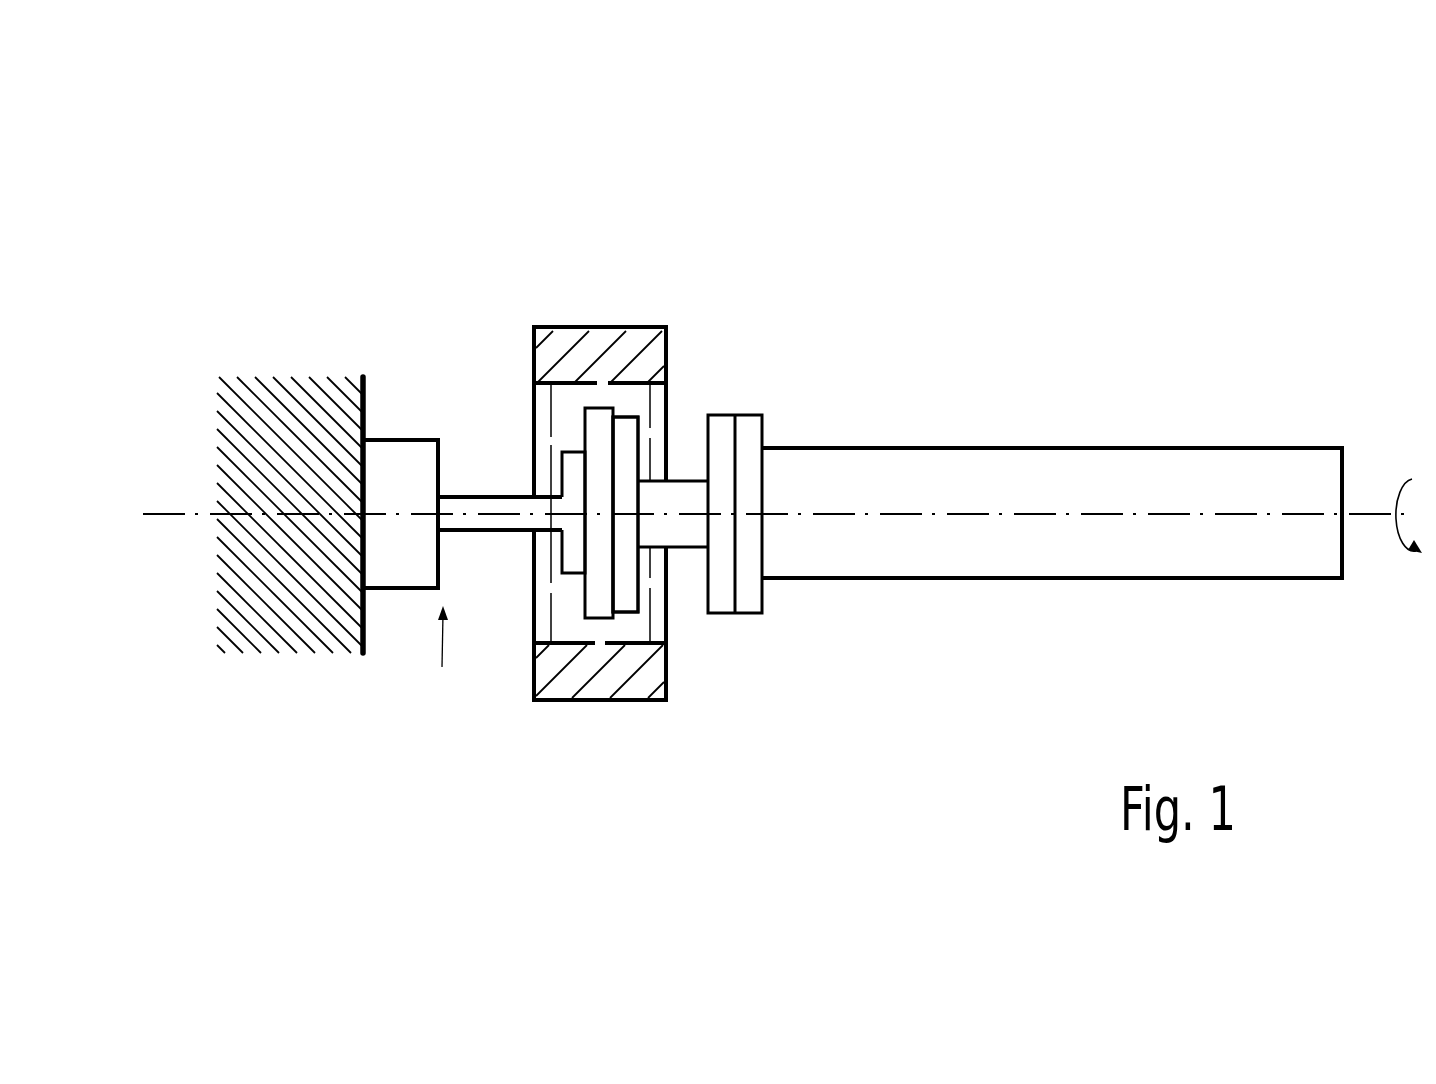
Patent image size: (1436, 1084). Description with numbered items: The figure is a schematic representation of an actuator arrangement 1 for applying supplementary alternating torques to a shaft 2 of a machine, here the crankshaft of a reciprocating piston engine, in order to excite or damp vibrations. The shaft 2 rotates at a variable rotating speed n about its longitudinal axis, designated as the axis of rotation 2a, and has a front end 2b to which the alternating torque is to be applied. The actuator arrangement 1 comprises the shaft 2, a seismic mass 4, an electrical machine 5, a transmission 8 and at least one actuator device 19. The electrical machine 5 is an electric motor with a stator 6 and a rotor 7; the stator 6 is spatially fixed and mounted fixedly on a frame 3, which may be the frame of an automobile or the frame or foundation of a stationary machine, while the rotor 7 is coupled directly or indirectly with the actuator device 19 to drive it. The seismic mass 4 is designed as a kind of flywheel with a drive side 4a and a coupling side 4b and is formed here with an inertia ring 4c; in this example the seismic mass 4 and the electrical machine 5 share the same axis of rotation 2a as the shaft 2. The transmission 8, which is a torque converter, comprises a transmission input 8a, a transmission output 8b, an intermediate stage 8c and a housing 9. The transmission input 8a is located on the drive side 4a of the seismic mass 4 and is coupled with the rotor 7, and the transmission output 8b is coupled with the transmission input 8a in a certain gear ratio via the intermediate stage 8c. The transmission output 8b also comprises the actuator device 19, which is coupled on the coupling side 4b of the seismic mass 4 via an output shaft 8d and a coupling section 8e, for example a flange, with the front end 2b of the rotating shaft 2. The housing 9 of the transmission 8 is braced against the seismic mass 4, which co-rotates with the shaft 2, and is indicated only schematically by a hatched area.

The actuator arrangement 1 is at (686, 232).
The shaft 2 is at (1172, 465).
The axis of rotation 2a is at (1377, 513).
The front end 2b is at (750, 440).
The frame 3 is at (263, 398).
The seismic mass 4 is at (620, 461).
The drive side 4a is at (533, 344).
The coupling side 4b is at (668, 362).
The inertia ring 4c is at (587, 353).
The electrical machine 5 is at (438, 655).
The stator 6 is at (388, 455).
The rotor 7 is at (457, 507).
The transmission 8 is at (610, 595).
The transmission input 8a is at (575, 480).
The transmission output 8b is at (628, 597).
The actuator device 19 is at (625, 514).
The intermediate stage 8c is at (600, 603).
The output shaft 8d is at (675, 538).
The coupling section 8e is at (722, 600).
The housing 9 is at (550, 620).
The rotating speed n is at (1402, 480).